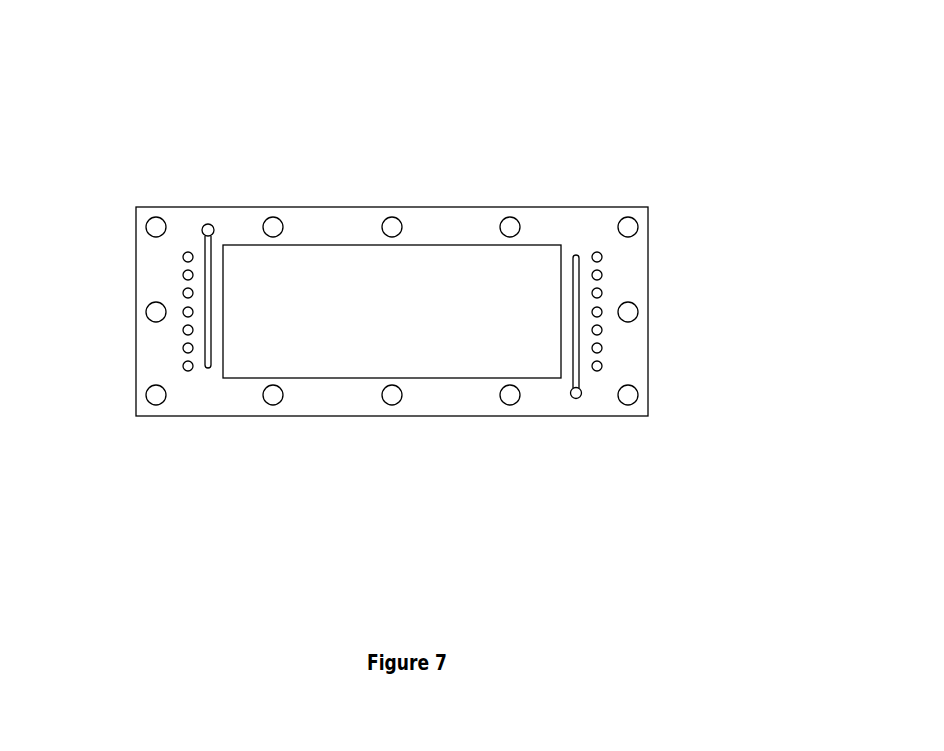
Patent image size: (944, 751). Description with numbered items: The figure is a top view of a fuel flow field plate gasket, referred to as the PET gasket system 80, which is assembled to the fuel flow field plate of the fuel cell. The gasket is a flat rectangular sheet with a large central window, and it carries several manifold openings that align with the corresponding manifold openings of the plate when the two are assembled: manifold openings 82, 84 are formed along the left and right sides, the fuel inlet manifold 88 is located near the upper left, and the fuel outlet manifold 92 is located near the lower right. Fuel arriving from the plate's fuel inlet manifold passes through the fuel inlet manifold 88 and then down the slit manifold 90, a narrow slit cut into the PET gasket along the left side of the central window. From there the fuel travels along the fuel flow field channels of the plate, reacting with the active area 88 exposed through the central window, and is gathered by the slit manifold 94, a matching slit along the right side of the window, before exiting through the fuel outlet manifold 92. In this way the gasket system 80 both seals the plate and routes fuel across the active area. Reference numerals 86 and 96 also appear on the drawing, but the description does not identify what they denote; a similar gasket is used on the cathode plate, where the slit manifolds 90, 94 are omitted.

The PET gasket system 80 is at (703, 55).
The manifold opening 82 is at (187, 348).
The manifold opening 84 is at (597, 293).
The plate body 86 is at (435, 218).
The fuel inlet manifold 88 is at (206, 225).
The slit manifold 90 is at (207, 278).
The fuel outlet manifold 92 is at (575, 395).
The slit manifold 94 is at (577, 344).
The mounting holes 96 is at (628, 228).